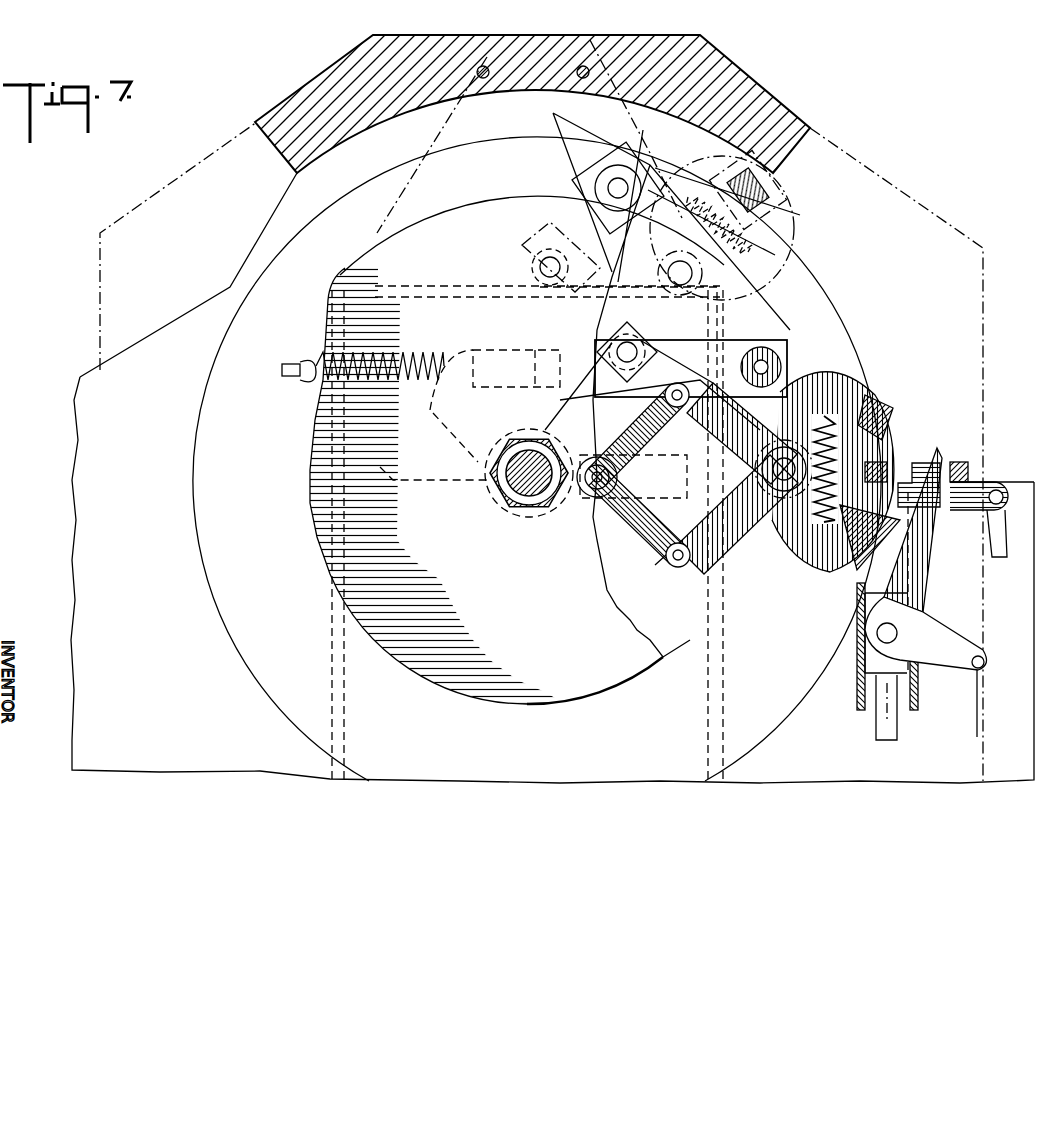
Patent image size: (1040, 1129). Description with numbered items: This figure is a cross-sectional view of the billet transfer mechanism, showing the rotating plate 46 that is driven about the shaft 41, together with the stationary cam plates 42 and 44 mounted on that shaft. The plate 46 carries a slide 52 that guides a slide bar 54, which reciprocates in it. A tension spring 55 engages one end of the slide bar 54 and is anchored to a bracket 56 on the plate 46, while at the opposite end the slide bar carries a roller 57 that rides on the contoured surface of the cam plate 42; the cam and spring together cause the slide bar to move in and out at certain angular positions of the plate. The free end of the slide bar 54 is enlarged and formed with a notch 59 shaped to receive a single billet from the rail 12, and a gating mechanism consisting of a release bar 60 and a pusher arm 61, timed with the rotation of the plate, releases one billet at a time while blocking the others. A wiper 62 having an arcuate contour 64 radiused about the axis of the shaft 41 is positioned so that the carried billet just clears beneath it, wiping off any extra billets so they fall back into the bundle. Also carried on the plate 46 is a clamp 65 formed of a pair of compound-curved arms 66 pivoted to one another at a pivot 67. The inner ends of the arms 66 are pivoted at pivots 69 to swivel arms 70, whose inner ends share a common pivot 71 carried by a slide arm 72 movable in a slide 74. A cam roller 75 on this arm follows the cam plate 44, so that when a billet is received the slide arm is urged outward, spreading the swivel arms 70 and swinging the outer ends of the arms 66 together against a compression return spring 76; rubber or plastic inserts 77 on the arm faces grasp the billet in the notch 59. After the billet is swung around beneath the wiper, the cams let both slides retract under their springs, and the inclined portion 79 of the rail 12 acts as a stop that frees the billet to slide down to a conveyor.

The rail 12 is at (1006, 482).
The shaft 41 is at (523, 490).
The cam plate 42 is at (540, 645).
The cam plate 44 is at (475, 472).
The plate 46 is at (540, 750).
The slide 52 is at (553, 383).
The slide bar 54 is at (511, 383).
The tension spring 55 is at (392, 357).
The bracket 56 is at (284, 374).
The roller 57 is at (762, 348).
The notch 59 is at (937, 450).
The release bar 60 is at (972, 511).
The pusher arm 61 is at (923, 588).
The wiper 62 is at (738, 98).
The arcuate contour 64 is at (752, 158).
The clamp 65 is at (804, 574).
The arms 66 is at (855, 388).
The pivot 67 is at (762, 470).
The pivot 69 is at (680, 406).
The swivel arms 70 is at (648, 425).
The common pivot 71 is at (602, 492).
The slide arm 72 is at (590, 497).
The slide 74 is at (678, 492).
The cam roller 75 is at (615, 479).
The compression return spring 76 is at (832, 470).
The inserts 77 is at (893, 410).
The inclined portion 79 is at (202, 304).